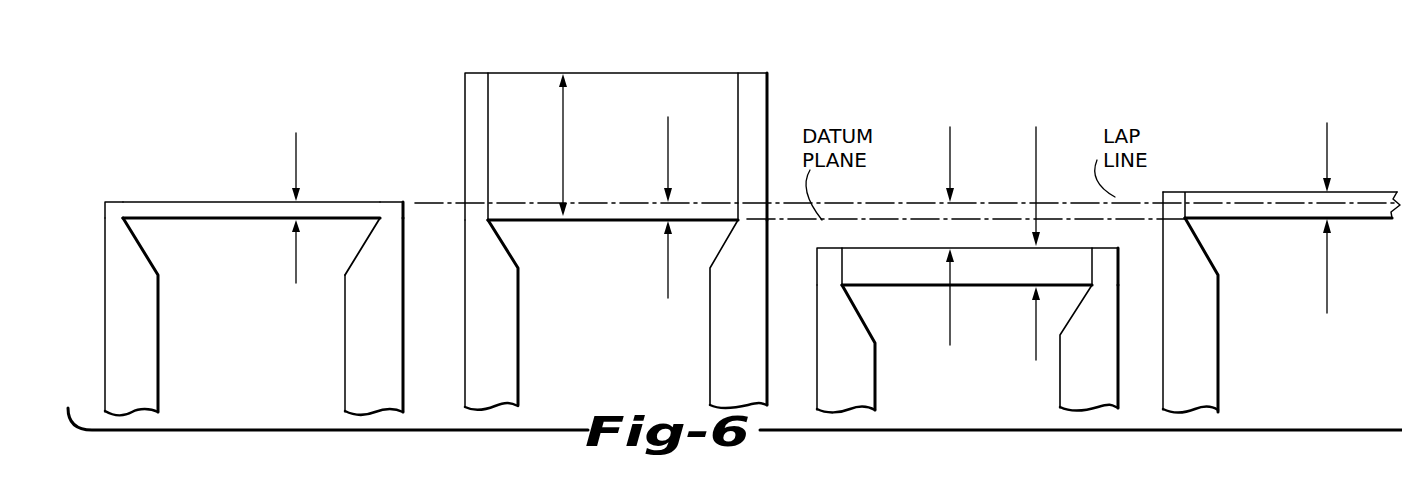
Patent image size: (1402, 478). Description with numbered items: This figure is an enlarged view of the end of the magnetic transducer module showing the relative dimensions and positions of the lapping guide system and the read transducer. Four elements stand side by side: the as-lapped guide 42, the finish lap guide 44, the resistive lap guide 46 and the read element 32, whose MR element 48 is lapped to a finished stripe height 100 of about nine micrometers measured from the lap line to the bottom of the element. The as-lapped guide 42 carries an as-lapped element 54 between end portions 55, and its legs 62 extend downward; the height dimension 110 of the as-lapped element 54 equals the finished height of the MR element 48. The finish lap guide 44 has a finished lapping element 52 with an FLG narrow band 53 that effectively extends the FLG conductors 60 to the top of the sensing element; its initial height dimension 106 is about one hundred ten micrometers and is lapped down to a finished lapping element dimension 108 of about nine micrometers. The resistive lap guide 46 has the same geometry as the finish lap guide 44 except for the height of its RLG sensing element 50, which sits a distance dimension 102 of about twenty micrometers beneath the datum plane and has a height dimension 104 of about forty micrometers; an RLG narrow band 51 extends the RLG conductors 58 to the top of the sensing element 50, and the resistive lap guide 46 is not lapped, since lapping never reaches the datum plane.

The read element 32 is at (1281, 281).
The as-lapped guide 42 is at (229, 285).
The finish lap guide 44 is at (603, 223).
The resistive lap guide 46 is at (965, 317).
The MR element 48 is at (1237, 203).
The RLG sensing element 50 is at (888, 262).
The RLG narrow band 51 is at (822, 272).
The FLG sensing element 52 is at (672, 90).
The FLG narrow band 53 is at (478, 80).
The as-lapped element 54 is at (237, 210).
The side flanges of first stop member 55 is at (120, 206).
The RLG conductors 58 is at (1068, 394).
The FLG conductors 60 is at (714, 382).
The legs of first stop member 62 is at (352, 380).
The finished stripe height 100 is at (1327, 145).
The distance dimension 102 is at (982, 144).
The height dimension of the resistive lapping element 104 is at (1068, 144).
The initial height dimension 106 is at (597, 132).
The finished lapping element dimension 108 is at (700, 132).
The height dimension of the as-lapped element 110 is at (296, 152).